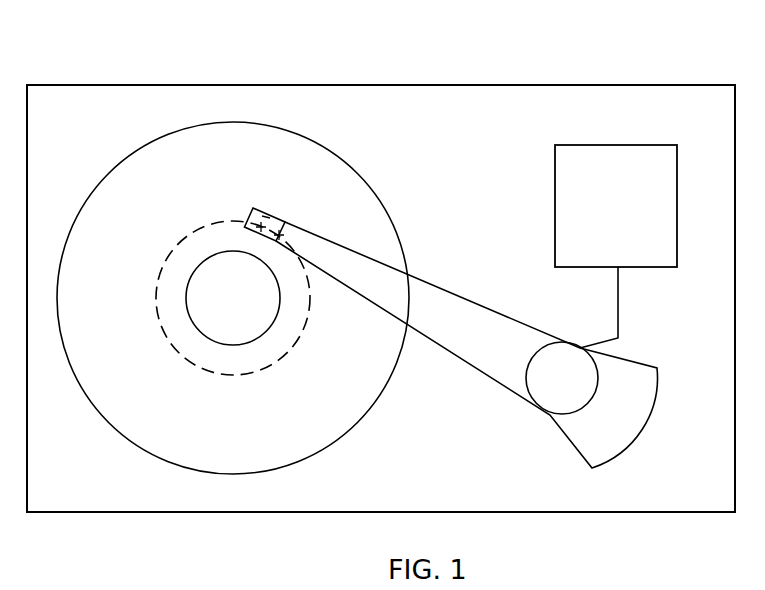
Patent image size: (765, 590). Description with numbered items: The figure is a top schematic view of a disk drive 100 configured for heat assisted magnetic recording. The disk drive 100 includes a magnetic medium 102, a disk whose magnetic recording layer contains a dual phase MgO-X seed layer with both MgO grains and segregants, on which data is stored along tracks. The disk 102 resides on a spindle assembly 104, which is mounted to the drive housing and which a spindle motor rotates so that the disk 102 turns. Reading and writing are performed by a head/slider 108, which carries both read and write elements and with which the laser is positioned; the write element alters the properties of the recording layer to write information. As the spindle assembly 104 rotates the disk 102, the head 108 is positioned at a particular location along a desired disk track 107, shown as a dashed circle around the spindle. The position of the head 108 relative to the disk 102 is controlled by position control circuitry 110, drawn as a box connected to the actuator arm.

The disk drive 100 is at (153, 58).
The magnetic medium 102 is at (370, 165).
The spindle assembly 104 is at (251, 303).
The disk track 107 is at (190, 232).
The head/slider 108 is at (272, 220).
The position control circuitry 110 is at (630, 219).